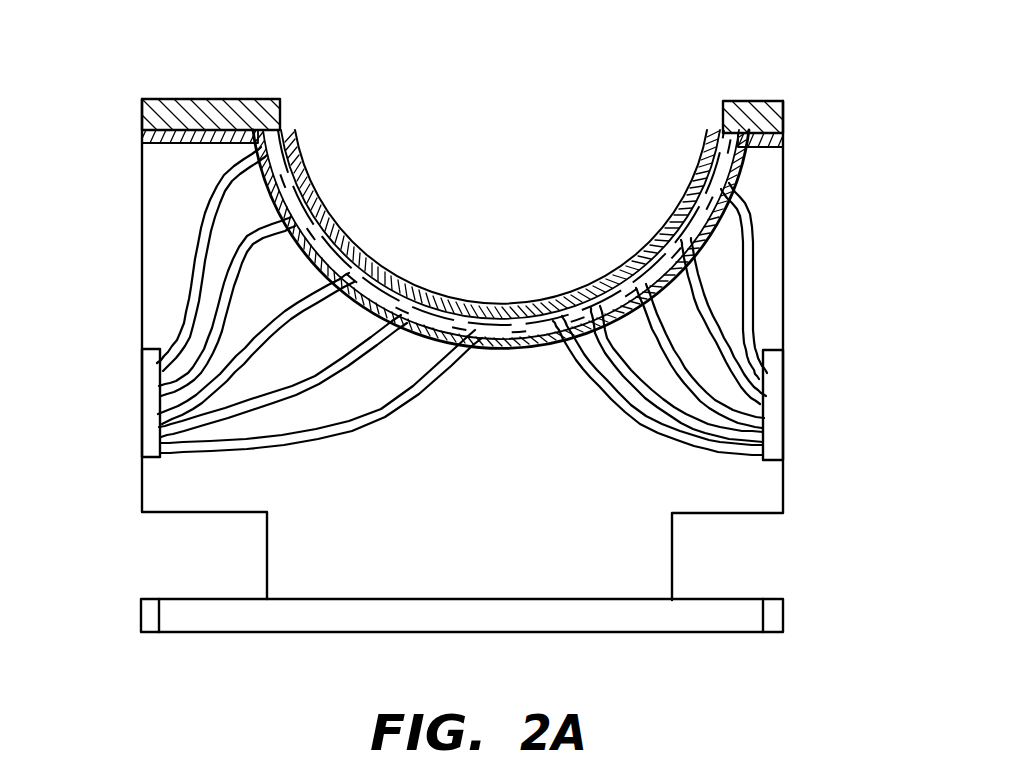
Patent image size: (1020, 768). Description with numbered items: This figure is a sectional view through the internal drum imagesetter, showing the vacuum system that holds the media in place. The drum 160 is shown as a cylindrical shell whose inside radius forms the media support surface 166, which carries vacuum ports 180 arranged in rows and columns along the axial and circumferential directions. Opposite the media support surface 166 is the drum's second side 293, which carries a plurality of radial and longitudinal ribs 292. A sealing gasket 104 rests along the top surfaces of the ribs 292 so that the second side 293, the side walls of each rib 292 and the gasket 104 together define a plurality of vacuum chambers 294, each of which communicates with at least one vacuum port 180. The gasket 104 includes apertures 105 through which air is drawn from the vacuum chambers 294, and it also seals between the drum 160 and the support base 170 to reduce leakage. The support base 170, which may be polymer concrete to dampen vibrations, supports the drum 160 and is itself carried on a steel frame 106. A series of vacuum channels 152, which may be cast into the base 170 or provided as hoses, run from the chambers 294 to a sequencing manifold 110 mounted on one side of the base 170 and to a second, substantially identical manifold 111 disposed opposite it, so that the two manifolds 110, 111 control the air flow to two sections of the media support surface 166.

The sealing gasket 104 is at (522, 352).
The apertures 105 is at (560, 342).
The steel frame 106 is at (205, 614).
The sequencing manifold 110 is at (773, 414).
The second vacuum manifold 111 is at (153, 410).
The vacuum channels 152 is at (740, 297).
The drum 160 is at (757, 102).
The media support surface 166 is at (283, 120).
The support base 170 is at (673, 568).
The vacuum ports 180 is at (287, 156).
The radial and longitudinal ribs 292 is at (783, 143).
The second side 293 is at (737, 243).
The vacuum chambers 294 is at (303, 204).